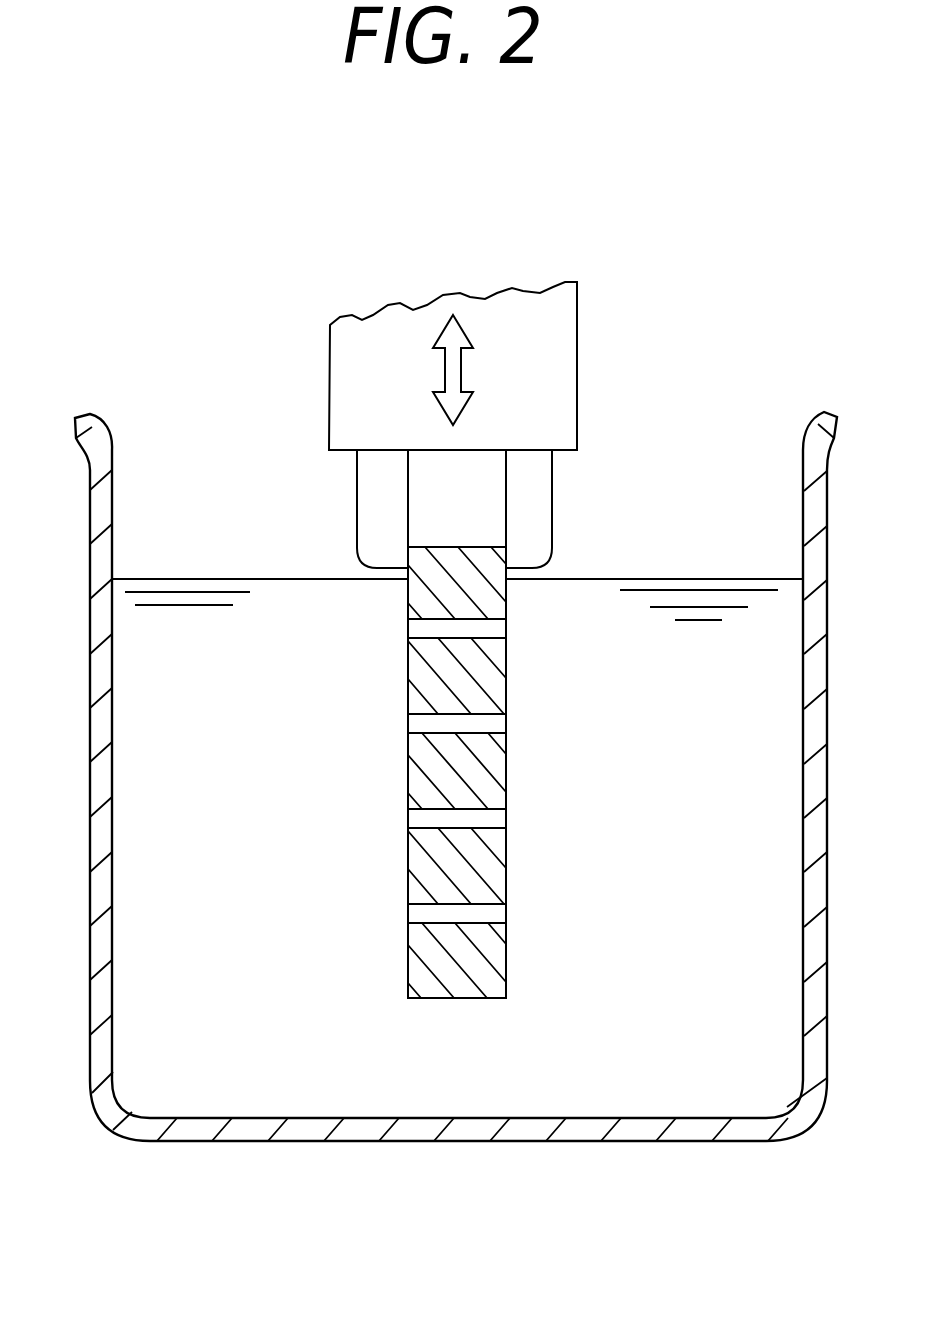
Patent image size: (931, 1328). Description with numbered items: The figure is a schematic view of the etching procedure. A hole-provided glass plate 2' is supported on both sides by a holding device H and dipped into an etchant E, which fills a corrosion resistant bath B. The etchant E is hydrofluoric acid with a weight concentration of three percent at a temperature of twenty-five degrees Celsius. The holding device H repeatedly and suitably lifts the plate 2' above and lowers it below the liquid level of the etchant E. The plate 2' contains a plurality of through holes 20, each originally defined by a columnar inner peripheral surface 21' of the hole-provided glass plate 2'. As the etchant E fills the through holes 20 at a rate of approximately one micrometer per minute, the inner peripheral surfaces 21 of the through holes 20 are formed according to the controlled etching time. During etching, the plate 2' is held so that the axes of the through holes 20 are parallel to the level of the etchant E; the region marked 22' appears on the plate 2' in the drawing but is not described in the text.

The hole-provided glass plate 2' is at (457, 769).
The through holes 20 is at (493, 628).
The inner peripheral surfaces 21 is at (405, 772).
The columnar inner peripheral surface 21' is at (234, 778).
The end portion 22' is at (333, 977).
The corrosion resistant bath B is at (810, 470).
The etchant E is at (142, 632).
The holding device H is at (558, 414).